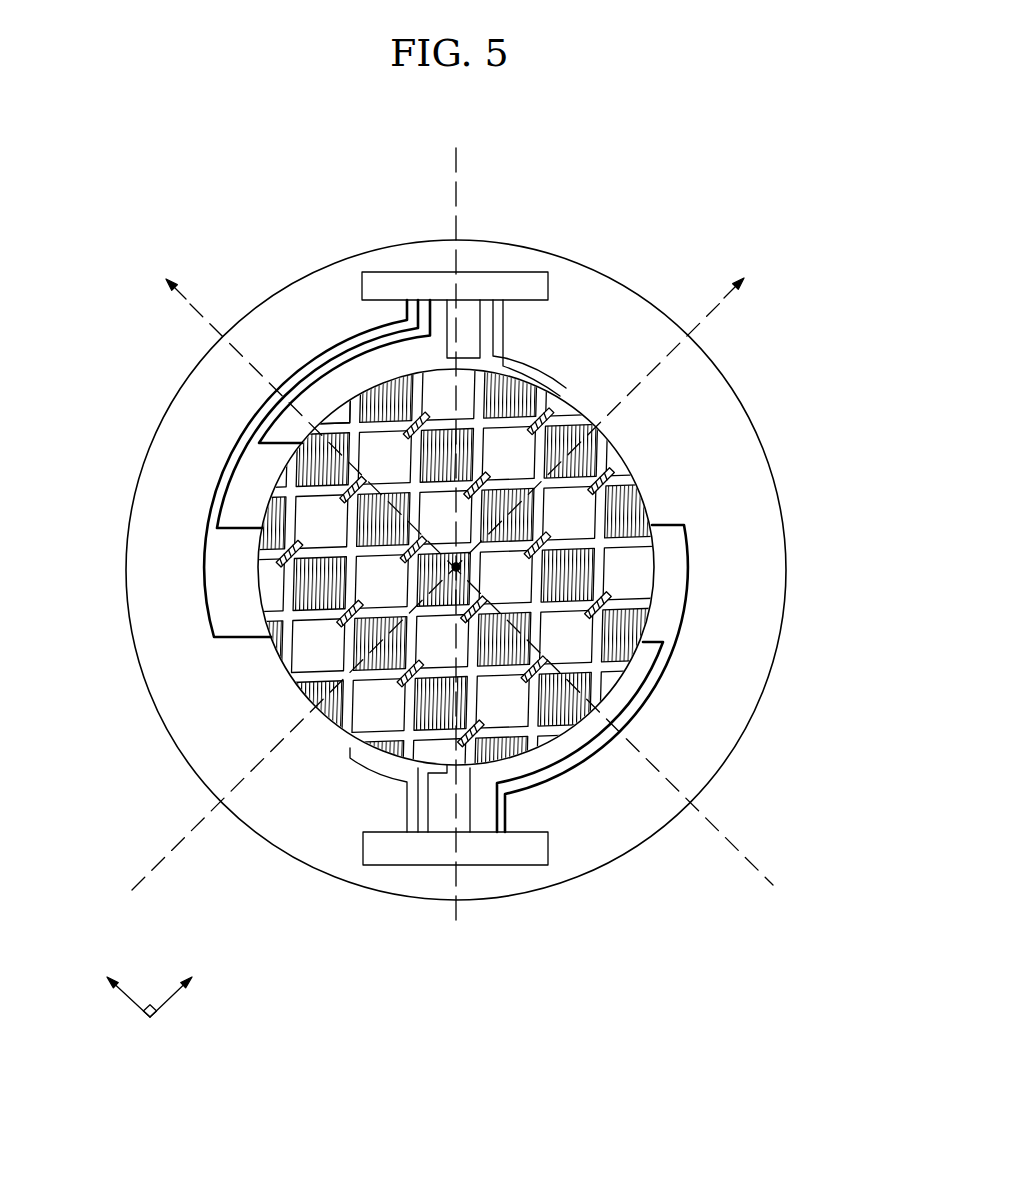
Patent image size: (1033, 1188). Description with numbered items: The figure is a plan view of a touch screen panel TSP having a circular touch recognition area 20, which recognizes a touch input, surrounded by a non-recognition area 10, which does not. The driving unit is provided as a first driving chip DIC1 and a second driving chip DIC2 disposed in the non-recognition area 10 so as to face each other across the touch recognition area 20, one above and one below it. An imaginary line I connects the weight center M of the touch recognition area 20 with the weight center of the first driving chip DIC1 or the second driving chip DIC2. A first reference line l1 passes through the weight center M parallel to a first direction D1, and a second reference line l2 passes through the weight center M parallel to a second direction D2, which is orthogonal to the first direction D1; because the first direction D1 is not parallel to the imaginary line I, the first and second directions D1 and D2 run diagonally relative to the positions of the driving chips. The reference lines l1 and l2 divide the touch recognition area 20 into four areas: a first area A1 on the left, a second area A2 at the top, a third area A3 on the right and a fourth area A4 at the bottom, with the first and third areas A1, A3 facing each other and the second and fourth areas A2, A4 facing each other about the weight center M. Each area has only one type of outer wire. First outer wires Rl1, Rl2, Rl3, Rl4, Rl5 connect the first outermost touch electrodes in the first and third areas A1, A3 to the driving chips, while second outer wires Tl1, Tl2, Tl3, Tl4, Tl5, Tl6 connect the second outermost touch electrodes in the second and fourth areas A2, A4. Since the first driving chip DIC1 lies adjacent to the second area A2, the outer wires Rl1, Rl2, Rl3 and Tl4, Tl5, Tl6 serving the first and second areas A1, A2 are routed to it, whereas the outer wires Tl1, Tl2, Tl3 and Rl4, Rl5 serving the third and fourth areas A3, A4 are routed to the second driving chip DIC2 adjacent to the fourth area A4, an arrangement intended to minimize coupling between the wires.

The non-recognition area 10 is at (780, 485).
The touch recognition area 20 is at (345, 372).
The touch screen panel TSP is at (758, 360).
The first driving chip DIC1 is at (408, 272).
The second driving chip DIC2 is at (525, 866).
The second outer wire Tl1 is at (352, 760).
The second outer wire Tl2 is at (420, 790).
The second outer wire Tl3 is at (447, 780).
The second outer wire Tl4 is at (542, 362).
The second outer wire Tl5 is at (500, 350).
The second outer wire Tl6 is at (452, 340).
The first outer wire Rl1 is at (332, 372).
The first outer wire Rl2 is at (308, 382).
The first outer wire Rl3 is at (282, 392).
The first outer wire Rl4 is at (560, 782).
The first outer wire Rl5 is at (588, 770).
The first area A1 is at (344, 577).
The second area A2 is at (452, 462).
The third area A3 is at (562, 577).
The fourth area A4 is at (450, 680).
The weight center M is at (445, 569).
The first reference line l1 is at (203, 316).
The second reference line l2 is at (722, 302).
The first direction D1 is at (137, 636).
The second direction D2 is at (453, 635).
The imaginary line I is at (462, 539).